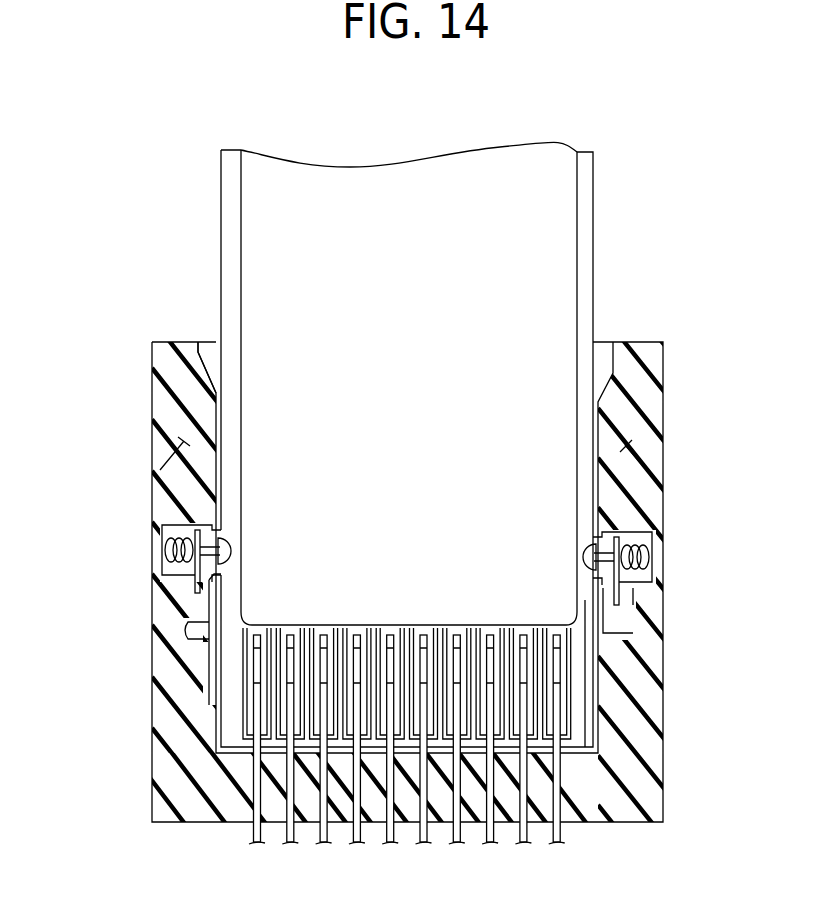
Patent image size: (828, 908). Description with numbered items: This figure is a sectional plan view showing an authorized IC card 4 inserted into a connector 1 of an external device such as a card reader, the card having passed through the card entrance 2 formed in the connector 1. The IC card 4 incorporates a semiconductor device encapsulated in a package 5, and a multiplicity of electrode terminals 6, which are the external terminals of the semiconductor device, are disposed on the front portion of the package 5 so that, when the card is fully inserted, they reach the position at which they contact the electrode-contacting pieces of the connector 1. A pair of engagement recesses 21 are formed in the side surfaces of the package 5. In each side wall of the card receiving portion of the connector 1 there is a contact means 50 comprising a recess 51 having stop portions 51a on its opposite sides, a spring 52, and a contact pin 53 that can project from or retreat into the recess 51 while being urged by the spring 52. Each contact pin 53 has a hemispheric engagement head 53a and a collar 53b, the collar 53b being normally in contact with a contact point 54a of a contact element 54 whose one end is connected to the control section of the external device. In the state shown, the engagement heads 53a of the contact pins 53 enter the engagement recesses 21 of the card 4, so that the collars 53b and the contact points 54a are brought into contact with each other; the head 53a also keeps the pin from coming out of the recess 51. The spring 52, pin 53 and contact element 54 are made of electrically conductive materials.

The connector 1 is at (633, 336).
The card entrance 2 is at (213, 346).
The IC card 4 is at (600, 186).
The package 5 is at (500, 148).
The electrode terminals 6 is at (243, 718).
The engagement recesses 21 is at (227, 533).
The contact means 50 is at (176, 567).
The recess 51 is at (656, 561).
The stop portions 51a is at (604, 532).
The spring 52 is at (166, 538).
The contact pin 53 is at (201, 524).
The engagement head 53a is at (233, 550).
The collar 53b is at (196, 580).
The contact element 54 is at (181, 637).
The contact point 54a is at (176, 601).